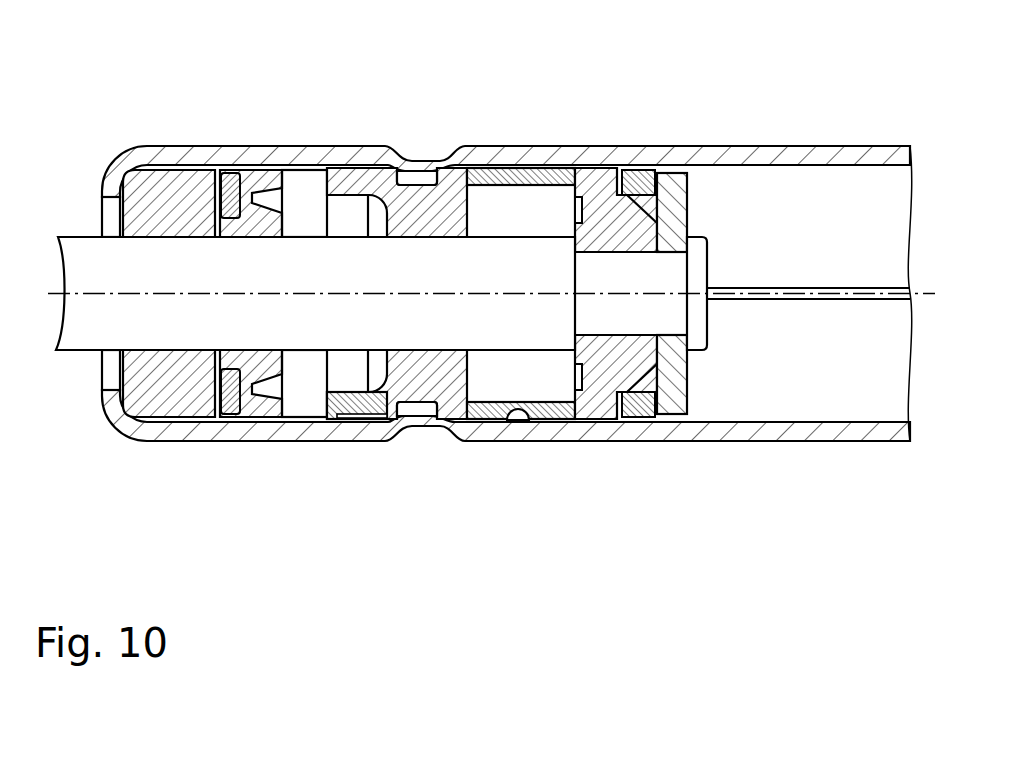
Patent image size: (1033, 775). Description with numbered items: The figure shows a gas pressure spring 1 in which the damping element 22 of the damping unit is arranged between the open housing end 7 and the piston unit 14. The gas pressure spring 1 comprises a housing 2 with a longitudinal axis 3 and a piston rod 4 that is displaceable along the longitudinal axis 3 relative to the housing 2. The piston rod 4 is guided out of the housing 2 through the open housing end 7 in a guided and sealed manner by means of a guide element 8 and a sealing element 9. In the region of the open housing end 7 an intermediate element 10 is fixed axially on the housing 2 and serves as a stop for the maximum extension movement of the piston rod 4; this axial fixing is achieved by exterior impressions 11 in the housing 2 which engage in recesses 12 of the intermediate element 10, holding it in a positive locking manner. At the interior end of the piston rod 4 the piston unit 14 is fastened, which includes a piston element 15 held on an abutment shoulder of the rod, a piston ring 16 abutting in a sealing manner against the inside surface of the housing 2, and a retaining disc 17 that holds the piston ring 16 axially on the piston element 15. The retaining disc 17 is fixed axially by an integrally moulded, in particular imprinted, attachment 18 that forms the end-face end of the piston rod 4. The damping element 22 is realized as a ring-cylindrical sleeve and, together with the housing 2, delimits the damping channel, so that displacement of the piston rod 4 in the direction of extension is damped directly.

The gas pressure spring 1 is at (691, 103).
The housing 2 is at (233, 428).
The longitudinal axis 3 is at (155, 293).
The piston rod 4 is at (87, 332).
The open housing end 7 is at (74, 137).
The guide element 8 is at (192, 177).
The sealing element 9 is at (228, 177).
The intermediate element 10 is at (452, 175).
The exterior impression 11 is at (418, 430).
The recess 12 is at (410, 180).
The piston unit 14 is at (604, 152).
The piston element 15 is at (597, 405).
The piston ring 16 is at (636, 419).
The retaining disc 17 is at (673, 403).
The attachment 18 is at (700, 322).
The damping element 22 is at (492, 422).